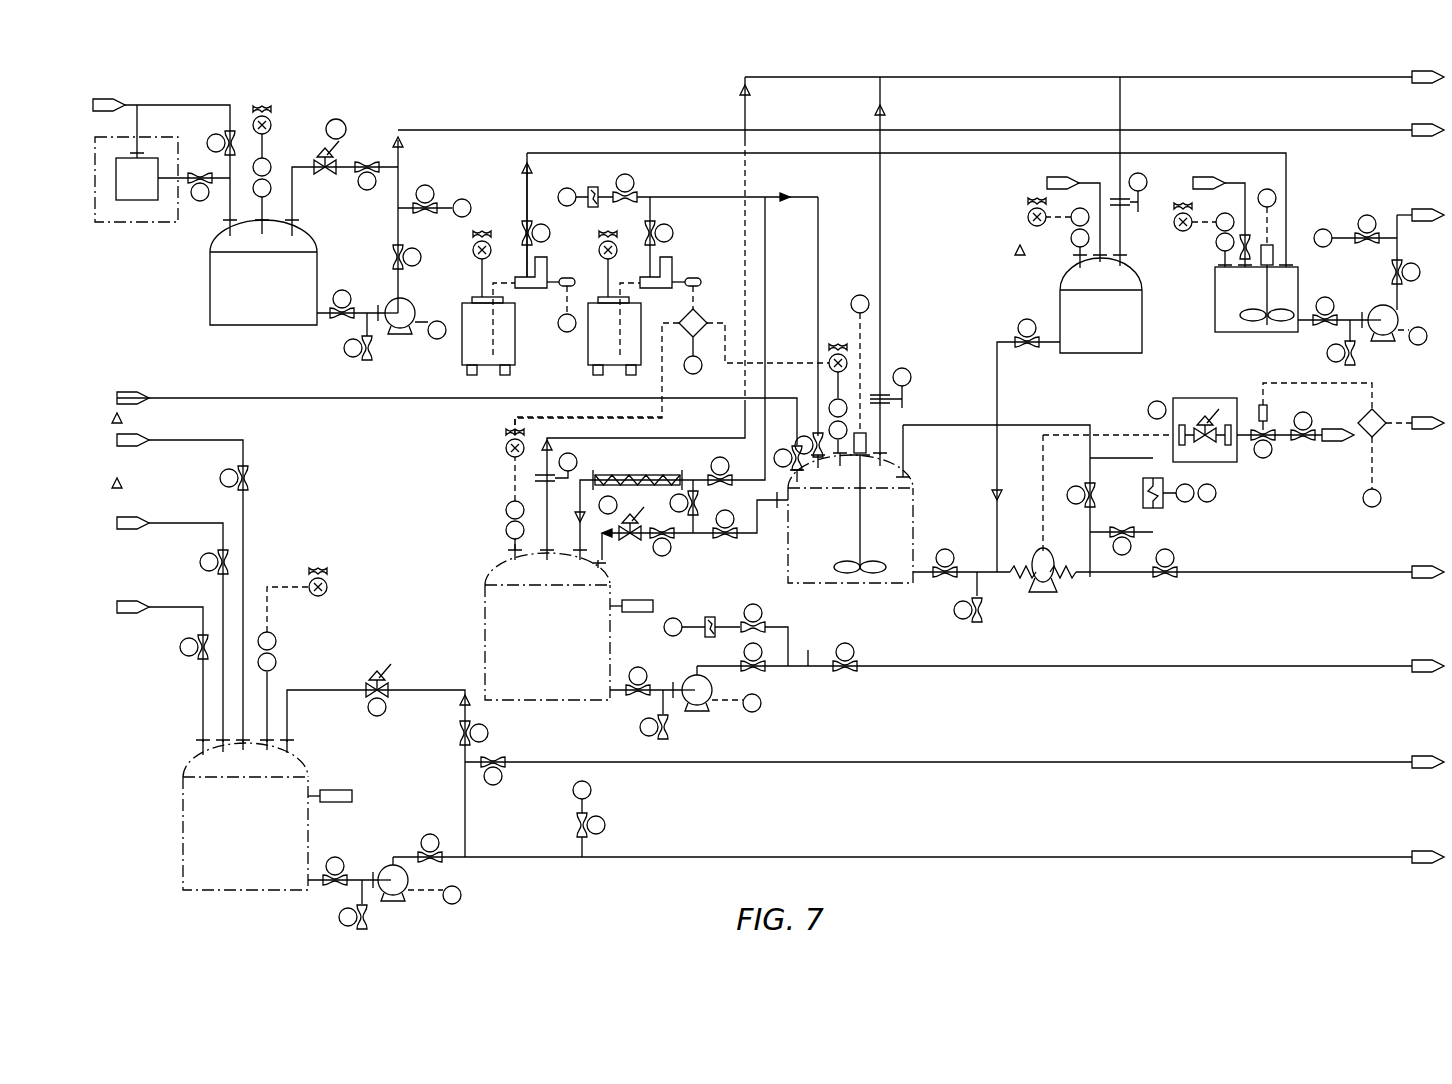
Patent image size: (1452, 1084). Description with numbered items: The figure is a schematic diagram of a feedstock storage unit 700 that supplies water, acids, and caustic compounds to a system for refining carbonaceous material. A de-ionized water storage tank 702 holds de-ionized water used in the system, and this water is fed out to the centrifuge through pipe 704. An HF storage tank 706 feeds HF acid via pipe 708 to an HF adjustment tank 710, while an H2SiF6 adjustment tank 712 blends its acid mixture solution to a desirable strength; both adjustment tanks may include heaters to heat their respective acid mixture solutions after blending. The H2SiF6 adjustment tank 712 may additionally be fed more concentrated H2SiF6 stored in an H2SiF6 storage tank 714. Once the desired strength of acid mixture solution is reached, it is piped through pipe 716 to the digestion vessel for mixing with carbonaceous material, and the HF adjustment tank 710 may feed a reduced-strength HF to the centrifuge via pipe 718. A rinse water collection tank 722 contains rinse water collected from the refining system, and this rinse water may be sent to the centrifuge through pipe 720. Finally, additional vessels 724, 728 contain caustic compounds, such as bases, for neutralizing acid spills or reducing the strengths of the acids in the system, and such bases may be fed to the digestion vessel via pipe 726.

The feedstock storage unit 700 is at (1094, 876).
The de-ionized water storage tank 702 is at (244, 301).
The pipe 704 is at (570, 128).
The HF storage tank 706 is at (588, 347).
The pipe 708 is at (821, 234).
The HF adjustment tank 710 is at (529, 653).
The H2SiF6 adjustment tank 712 is at (868, 586).
The H2SiF6 storage tank 714 is at (1104, 356).
The pipe 716 is at (1295, 575).
The pipe 718 is at (1137, 669).
The pipe 720 is at (1250, 858).
The rinse water collection tank 722 is at (227, 843).
The vessel 724 is at (460, 362).
The pipe 726 is at (1401, 212).
The vessel 728 is at (1237, 335).